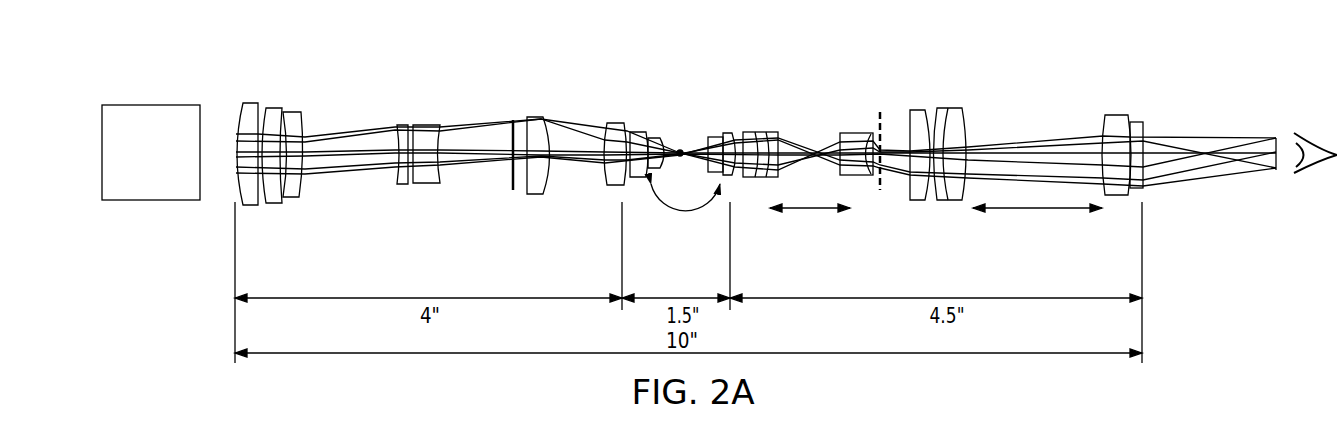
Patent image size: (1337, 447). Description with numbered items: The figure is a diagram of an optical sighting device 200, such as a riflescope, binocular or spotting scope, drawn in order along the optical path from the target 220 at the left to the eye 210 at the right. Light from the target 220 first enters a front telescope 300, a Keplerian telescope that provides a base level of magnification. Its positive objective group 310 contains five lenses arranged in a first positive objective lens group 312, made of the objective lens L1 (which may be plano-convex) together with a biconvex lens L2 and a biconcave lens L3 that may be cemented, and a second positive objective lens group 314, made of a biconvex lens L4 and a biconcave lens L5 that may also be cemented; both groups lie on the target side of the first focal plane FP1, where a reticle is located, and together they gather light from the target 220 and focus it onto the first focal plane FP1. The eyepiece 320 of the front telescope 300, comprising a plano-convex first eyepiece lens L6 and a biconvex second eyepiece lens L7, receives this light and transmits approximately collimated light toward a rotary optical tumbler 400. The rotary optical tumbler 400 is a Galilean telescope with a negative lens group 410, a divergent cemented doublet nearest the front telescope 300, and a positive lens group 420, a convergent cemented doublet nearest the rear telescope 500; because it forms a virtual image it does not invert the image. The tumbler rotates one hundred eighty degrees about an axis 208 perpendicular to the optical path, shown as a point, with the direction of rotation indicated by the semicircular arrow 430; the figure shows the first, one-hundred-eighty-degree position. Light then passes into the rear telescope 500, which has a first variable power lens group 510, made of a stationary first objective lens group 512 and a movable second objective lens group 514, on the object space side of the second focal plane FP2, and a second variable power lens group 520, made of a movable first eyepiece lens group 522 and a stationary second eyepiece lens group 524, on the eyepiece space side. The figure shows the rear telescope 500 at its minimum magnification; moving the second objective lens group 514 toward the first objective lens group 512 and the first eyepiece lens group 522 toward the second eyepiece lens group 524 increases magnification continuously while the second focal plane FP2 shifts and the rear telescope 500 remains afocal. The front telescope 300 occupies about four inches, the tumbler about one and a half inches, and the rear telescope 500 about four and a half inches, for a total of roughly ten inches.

The optical sighting device 200 is at (1219, 71).
The axis 208 is at (678, 150).
The eye 210 is at (1319, 163).
The target 220 is at (135, 175).
The front telescope 300 is at (414, 156).
The positive objective group 310 is at (442, 44).
The first positive objective lens group 312 is at (323, 221).
The second positive objective lens group 314 is at (457, 221).
The eyepiece 320 is at (613, 65).
The rotary optical tumbler 400 is at (679, 168).
The negative lens group 410 is at (623, 65).
The positive lens group 420 is at (688, 65).
The semicircular arrow 430 is at (686, 222).
The rear telescope 500 is at (940, 168).
The first variable power lens group 510 is at (742, 65).
The first objective lens group 512 is at (782, 221).
The second objective lens group 514 is at (875, 221).
The second variable power lens group 520 is at (1140, 65).
The first eyepiece lens group 522 is at (905, 221).
The second eyepiece lens group 524 is at (1140, 221).
The objective lens L1 is at (246, 102).
The biconvex lens L2 is at (272, 108).
The biconcave lens L3 is at (296, 112).
The biconvex lens L4 is at (404, 125).
The biconcave lens L5 is at (431, 125).
The first eyepiece lens L6 is at (538, 117).
The second eyepiece lens L7 is at (613, 123).
The first focal plane FP1 is at (509, 183).
The second focal plane FP2 is at (882, 116).